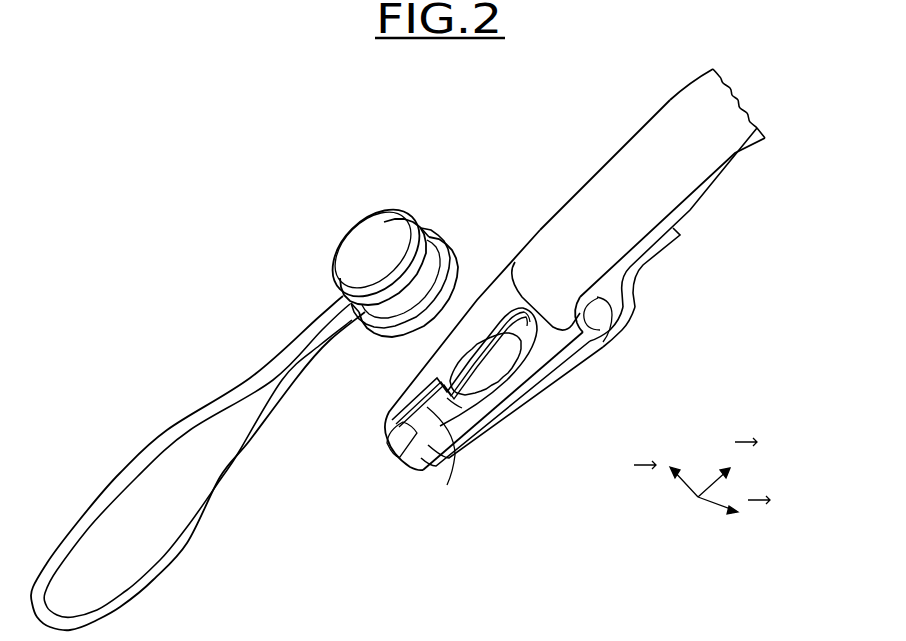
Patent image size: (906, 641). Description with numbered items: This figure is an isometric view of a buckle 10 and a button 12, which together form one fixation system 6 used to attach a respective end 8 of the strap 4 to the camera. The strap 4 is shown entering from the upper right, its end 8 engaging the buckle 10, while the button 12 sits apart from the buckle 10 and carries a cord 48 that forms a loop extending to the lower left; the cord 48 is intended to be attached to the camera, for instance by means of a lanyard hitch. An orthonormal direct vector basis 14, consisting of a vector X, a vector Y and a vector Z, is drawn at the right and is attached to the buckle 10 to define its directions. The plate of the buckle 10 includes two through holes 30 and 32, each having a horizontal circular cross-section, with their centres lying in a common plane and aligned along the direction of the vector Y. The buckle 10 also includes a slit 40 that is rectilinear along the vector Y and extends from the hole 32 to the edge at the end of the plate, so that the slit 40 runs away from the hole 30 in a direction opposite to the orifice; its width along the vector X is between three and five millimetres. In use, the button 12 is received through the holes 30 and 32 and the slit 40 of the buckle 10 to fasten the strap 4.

The strap 4 is at (652, 110).
The fixation system 6 is at (263, 223).
The end of the strap 8 is at (530, 275).
The buckle 10 is at (500, 434).
The button 12 is at (378, 333).
The orthonormal direct vector basis 14 is at (770, 432).
The through hole 30 is at (485, 335).
The through hole 32 is at (447, 462).
The slit 40 is at (401, 460).
The cord 48 is at (177, 551).